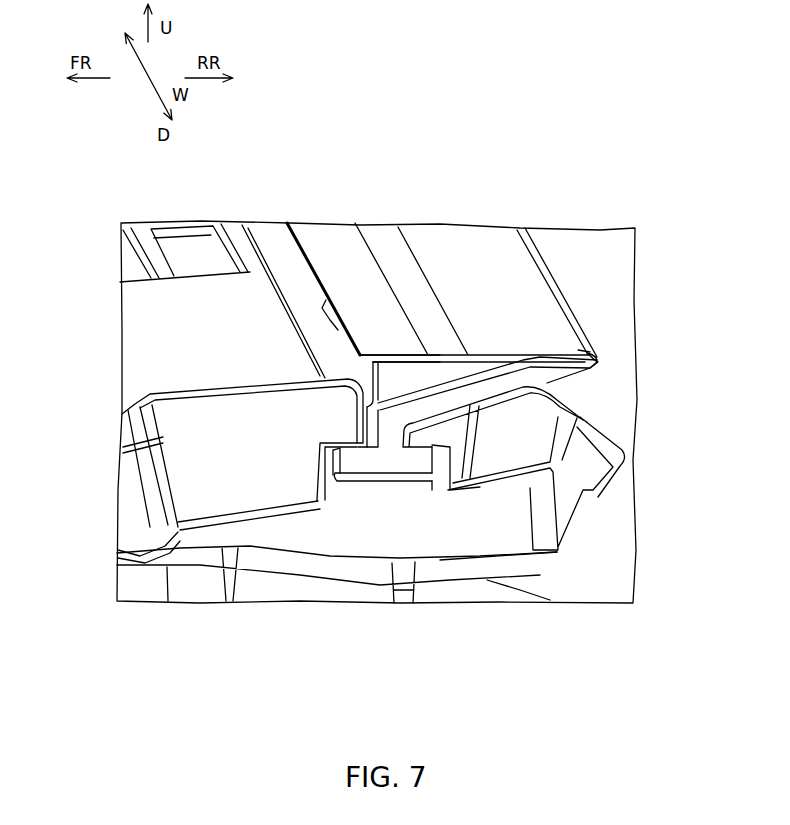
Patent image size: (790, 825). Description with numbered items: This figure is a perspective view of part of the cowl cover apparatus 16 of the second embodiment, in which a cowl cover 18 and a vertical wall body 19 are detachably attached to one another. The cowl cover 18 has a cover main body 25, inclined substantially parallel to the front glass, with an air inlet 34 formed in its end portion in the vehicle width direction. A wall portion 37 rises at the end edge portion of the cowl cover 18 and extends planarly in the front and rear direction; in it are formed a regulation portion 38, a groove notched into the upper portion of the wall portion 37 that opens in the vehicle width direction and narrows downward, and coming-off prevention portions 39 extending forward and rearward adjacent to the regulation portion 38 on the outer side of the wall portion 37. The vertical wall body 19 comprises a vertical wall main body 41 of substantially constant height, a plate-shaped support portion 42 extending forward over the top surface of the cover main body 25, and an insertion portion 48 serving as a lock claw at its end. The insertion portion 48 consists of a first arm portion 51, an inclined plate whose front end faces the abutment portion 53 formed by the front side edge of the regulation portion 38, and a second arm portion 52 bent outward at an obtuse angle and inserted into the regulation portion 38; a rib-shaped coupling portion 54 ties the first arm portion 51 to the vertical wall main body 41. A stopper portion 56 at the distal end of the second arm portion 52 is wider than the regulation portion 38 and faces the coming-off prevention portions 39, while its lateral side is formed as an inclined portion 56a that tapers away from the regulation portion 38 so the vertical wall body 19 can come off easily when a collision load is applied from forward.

The cowl cover apparatus 16 is at (627, 208).
The cowl cover 18 is at (137, 364).
The vertical wall body 19 is at (317, 236).
The cover main body 25 is at (130, 397).
The air inlet 34 is at (175, 252).
The wall portion 37 is at (160, 454).
The regulation portion 38 is at (373, 393).
The coming-off prevention portion 39 is at (434, 455).
The vertical wall main body 41 is at (493, 240).
The support portion 42 is at (288, 300).
The insertion portion 48 is at (591, 351).
The first arm portion 51 is at (598, 380).
The second arm portion 52 is at (397, 428).
The abutment portion 53 is at (362, 415).
The coupling portion 54 is at (434, 372).
The stopper portion 56 is at (390, 480).
The inclined portion 56a is at (358, 455).